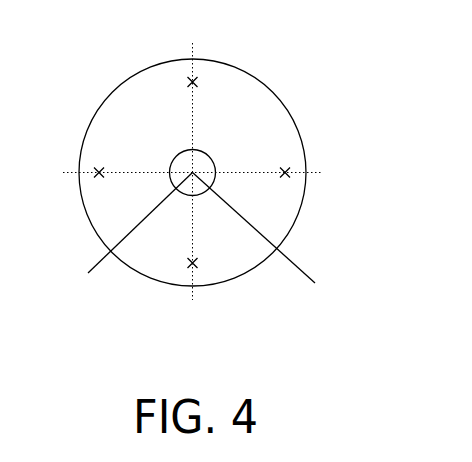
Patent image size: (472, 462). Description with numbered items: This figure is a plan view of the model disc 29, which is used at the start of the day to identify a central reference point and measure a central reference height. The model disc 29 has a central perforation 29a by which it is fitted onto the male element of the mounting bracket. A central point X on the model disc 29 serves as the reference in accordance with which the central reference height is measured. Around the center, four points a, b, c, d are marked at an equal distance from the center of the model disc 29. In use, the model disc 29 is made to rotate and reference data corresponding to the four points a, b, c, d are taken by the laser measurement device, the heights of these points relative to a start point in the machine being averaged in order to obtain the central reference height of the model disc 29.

The model disc 29 is at (312, 212).
The perforation 29a is at (274, 244).
The central point X is at (133, 234).
The point a is at (195, 78).
The point b is at (290, 170).
The point c is at (194, 265).
The point d is at (95, 170).